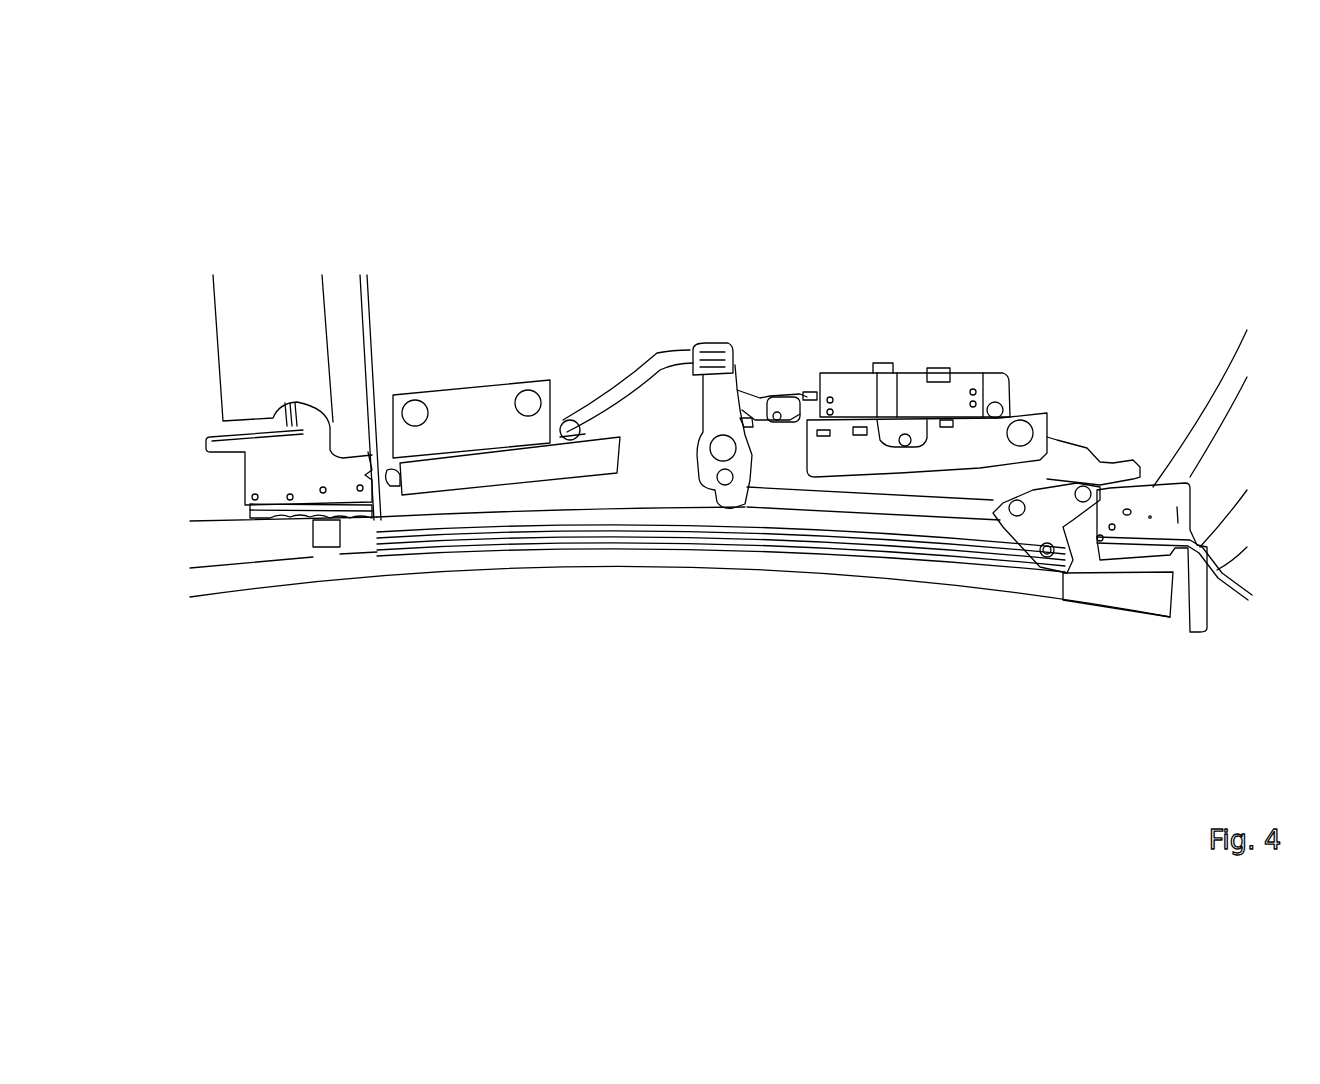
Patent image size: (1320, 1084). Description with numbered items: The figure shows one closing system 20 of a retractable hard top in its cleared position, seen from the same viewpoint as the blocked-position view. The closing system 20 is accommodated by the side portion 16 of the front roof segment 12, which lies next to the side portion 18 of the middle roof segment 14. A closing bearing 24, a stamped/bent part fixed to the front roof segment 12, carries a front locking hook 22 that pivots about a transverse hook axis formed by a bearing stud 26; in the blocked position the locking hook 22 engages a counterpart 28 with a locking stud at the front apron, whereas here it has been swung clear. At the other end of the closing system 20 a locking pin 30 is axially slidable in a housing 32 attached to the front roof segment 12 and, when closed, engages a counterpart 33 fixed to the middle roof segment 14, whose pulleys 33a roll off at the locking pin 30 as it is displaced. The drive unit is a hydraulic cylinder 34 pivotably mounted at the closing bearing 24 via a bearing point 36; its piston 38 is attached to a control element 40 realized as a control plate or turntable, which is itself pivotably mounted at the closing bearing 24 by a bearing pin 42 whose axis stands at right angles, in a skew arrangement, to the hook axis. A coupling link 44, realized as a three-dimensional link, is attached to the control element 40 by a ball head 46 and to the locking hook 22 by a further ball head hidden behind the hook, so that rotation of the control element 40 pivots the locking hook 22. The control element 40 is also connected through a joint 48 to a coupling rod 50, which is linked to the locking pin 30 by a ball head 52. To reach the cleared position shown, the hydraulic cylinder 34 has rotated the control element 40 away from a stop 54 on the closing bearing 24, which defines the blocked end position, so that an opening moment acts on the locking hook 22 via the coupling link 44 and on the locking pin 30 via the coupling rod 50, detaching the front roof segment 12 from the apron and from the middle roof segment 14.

The front roof segment 12 is at (773, 320).
The middle roof segment 14 is at (138, 423).
The side portion of the front roof segment 16 is at (750, 563).
The side portion of the middle roof segment 18 is at (230, 583).
The closing system 20 is at (965, 253).
The locking hook 22 is at (1027, 538).
The closing bearing 24 is at (1067, 462).
The bearing stud 26 is at (1088, 488).
The counterpart 28 is at (1157, 533).
The locking pin 30 is at (393, 470).
The housing 32 is at (500, 468).
The counterpart 33 is at (280, 483).
The pulleys 33a is at (333, 505).
The hydraulic cylinder 34 is at (858, 385).
The bearing point 36 is at (997, 402).
The piston 38 is at (807, 390).
The control element 40 is at (707, 458).
The bearing pin 42 is at (752, 427).
The coupling link 44 is at (900, 508).
The ball head 46 is at (730, 493).
The joint 48 is at (713, 337).
The coupling rod 50 is at (620, 390).
The ball head 52 is at (563, 417).
The stop 54 is at (747, 437).